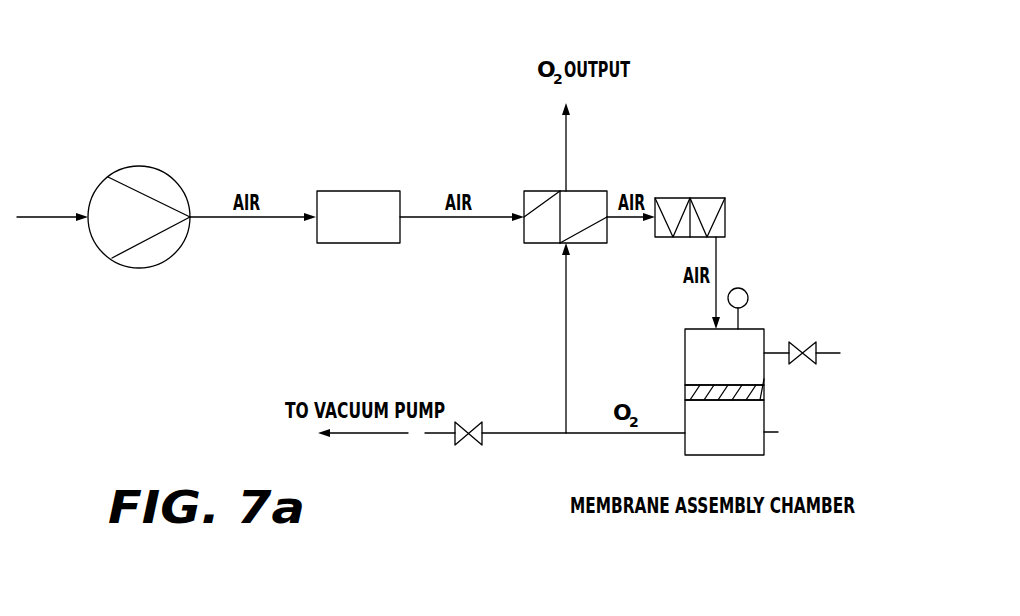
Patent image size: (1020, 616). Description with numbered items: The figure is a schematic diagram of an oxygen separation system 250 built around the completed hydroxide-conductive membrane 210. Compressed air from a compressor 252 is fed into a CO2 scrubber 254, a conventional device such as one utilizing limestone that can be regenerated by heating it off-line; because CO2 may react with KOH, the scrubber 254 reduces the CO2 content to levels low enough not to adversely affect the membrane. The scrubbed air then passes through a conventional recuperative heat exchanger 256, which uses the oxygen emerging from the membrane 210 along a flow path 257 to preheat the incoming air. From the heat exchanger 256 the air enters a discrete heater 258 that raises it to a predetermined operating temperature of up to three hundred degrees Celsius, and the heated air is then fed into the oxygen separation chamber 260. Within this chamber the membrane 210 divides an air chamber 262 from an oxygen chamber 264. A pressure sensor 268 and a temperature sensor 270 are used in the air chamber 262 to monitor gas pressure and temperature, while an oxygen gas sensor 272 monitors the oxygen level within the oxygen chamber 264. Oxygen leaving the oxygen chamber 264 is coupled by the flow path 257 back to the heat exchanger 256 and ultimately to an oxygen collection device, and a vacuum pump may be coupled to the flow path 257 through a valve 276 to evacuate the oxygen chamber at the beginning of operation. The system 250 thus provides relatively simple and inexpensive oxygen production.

The system 250 is at (742, 84).
The compressor 252 is at (139, 166).
The CO2 scrubber 254 is at (358, 217).
The recuperative heat exchanger 256 is at (590, 190).
The flow path 257 is at (566, 341).
The discrete heater 258 is at (711, 197).
The oxygen separation chamber 260 is at (822, 308).
The air chamber 262 is at (724, 357).
The oxygen chamber 264 is at (724, 427).
The pressure sensor 268 is at (745, 285).
The temperature sensor 270 is at (685, 367).
The hydroxide-conductive membrane 210 is at (760, 395).
The oxygen gas sensor 272 is at (778, 432).
The valve 276 is at (458, 446).